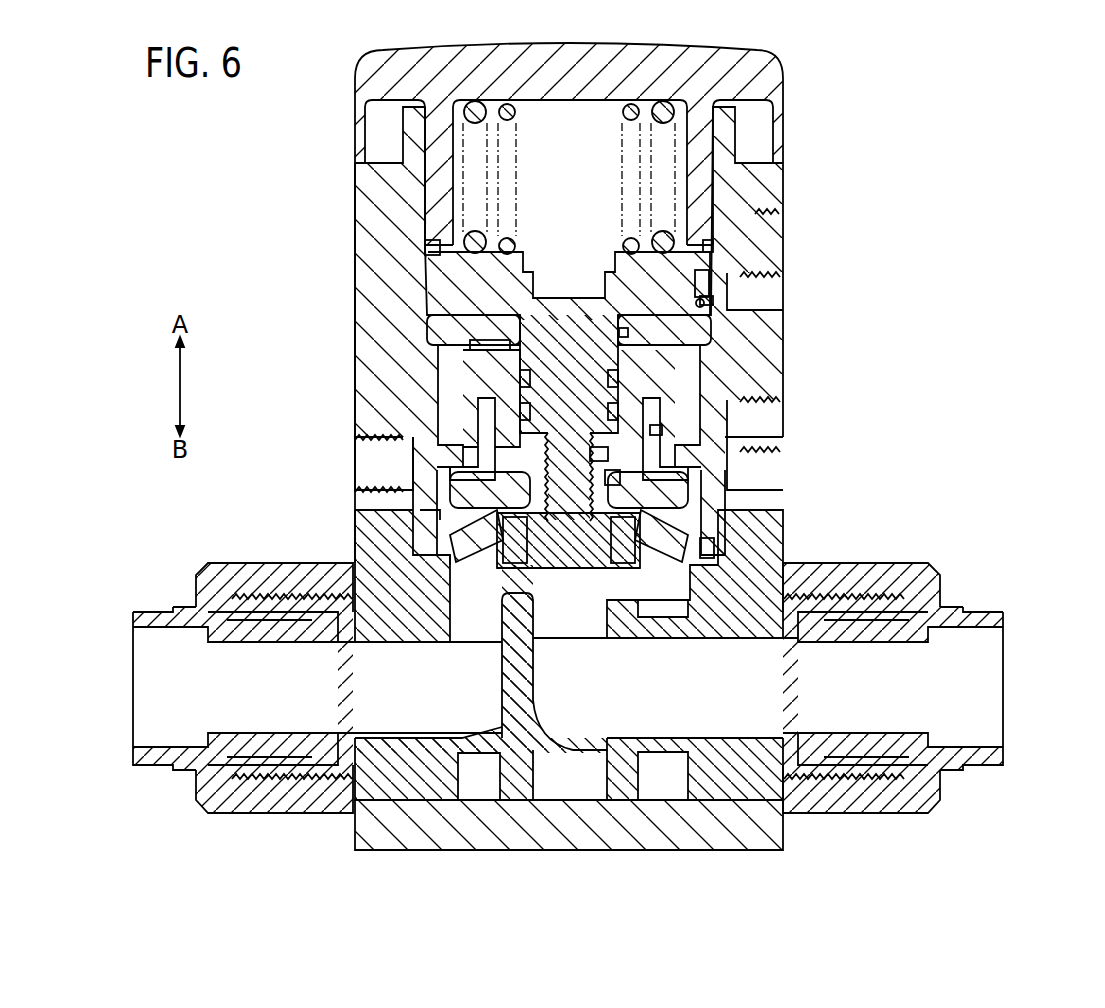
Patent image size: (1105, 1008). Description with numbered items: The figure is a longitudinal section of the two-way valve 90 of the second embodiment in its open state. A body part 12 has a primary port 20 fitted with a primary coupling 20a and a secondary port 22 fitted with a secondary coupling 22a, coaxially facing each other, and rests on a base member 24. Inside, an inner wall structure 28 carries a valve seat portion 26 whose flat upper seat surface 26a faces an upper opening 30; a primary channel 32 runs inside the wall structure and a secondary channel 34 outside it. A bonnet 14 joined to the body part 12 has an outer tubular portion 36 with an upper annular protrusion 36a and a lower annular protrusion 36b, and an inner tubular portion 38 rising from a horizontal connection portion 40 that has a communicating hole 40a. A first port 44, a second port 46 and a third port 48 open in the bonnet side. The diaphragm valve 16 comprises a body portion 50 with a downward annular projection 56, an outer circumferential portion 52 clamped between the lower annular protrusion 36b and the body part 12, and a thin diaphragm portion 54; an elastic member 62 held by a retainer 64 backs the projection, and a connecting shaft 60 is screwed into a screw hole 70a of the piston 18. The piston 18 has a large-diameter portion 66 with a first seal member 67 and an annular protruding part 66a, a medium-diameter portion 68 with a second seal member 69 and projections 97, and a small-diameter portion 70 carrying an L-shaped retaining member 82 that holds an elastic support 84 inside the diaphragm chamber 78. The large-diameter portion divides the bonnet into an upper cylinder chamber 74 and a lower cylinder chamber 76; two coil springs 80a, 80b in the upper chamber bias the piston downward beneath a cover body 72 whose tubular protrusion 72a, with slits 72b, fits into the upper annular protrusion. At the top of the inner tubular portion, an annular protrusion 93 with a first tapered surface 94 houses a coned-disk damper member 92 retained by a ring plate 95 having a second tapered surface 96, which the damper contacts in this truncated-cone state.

The two-way valve 90 is at (214, 131).
The cover body 72 is at (763, 62).
The upper annular protrusion 36a is at (410, 135).
The coil spring 80b is at (512, 113).
The upper cylinder chamber 74 is at (593, 148).
The tubular protrusion 72a is at (430, 190).
The coil spring 80a is at (477, 236).
The piston 18 is at (583, 255).
The annular protruding part 66a is at (503, 244).
The second tapered surface 96 is at (593, 268).
The slits 72b is at (428, 250).
The projections 97 is at (715, 248).
The first port 44 is at (762, 243).
The outer tubular portion 36 is at (370, 300).
The first seal member 67 is at (690, 285).
The damper member 92 is at (704, 302).
The first tapered surface 94 is at (470, 326).
The large-diameter portion 66 is at (713, 300).
The bonnet 14 is at (354, 350).
The ring plate 95 is at (628, 332).
The lower cylinder chamber 76 is at (693, 340).
The annular protrusion 93 is at (474, 352).
The inner tubular portion 38 is at (493, 378).
The second seal member 69 is at (617, 392).
The connection portion 40 is at (465, 410).
The medium-diameter portion 68 is at (672, 418).
The screw hole 70a is at (662, 430).
The second port 46 is at (768, 440).
The third port 48 is at (375, 472).
The connecting shaft 60 is at (608, 455).
The small-diameter portion 70 is at (620, 480).
The communicating hole 40a is at (445, 475).
The retaining member 82 is at (592, 470).
The elastic support 84 is at (423, 515).
The diaphragm chamber 78 is at (660, 510).
The lower annular protrusion 36b is at (435, 548).
The outer circumferential portion 52 is at (714, 545).
The diaphragm portion 54 is at (660, 556).
The elastic member 62 is at (480, 552).
The retainer 64 is at (535, 530).
The diaphragm valve 16 is at (575, 568).
The body portion 50 is at (595, 570).
The annular projection 56 is at (620, 566).
The seat surface 26a is at (512, 585).
The valve seat portion 26 is at (527, 613).
The inner wall structure 28 is at (503, 663).
The upper opening 30 is at (462, 572).
The body part 12 is at (728, 783).
The base member 24 is at (488, 840).
The secondary coupling 22a is at (282, 802).
The secondary port 22 is at (223, 683).
The secondary channel 34 is at (373, 693).
The primary coupling 20a is at (873, 802).
The primary port 20 is at (920, 685).
The primary channel 32 is at (772, 690).